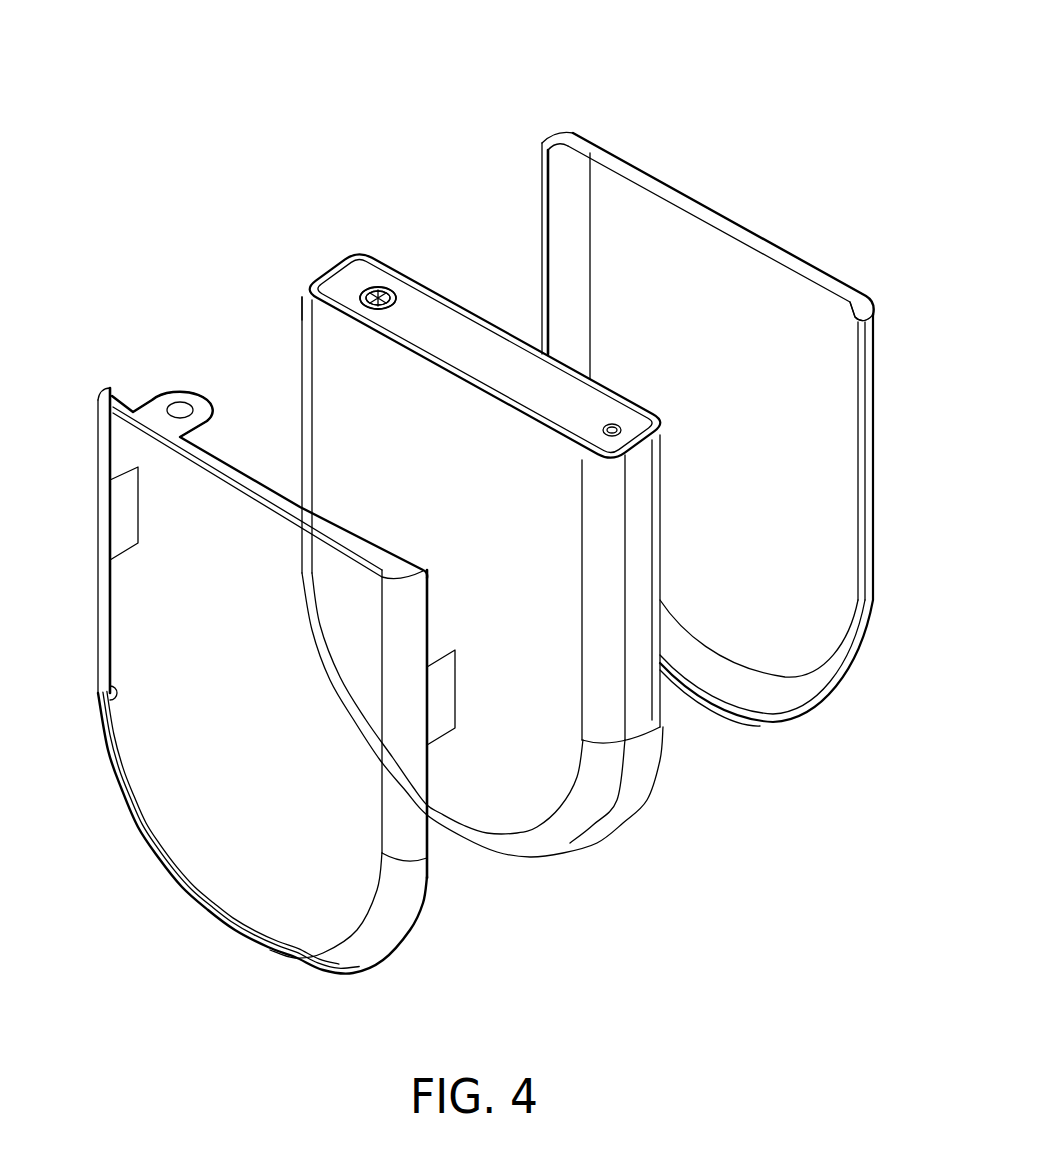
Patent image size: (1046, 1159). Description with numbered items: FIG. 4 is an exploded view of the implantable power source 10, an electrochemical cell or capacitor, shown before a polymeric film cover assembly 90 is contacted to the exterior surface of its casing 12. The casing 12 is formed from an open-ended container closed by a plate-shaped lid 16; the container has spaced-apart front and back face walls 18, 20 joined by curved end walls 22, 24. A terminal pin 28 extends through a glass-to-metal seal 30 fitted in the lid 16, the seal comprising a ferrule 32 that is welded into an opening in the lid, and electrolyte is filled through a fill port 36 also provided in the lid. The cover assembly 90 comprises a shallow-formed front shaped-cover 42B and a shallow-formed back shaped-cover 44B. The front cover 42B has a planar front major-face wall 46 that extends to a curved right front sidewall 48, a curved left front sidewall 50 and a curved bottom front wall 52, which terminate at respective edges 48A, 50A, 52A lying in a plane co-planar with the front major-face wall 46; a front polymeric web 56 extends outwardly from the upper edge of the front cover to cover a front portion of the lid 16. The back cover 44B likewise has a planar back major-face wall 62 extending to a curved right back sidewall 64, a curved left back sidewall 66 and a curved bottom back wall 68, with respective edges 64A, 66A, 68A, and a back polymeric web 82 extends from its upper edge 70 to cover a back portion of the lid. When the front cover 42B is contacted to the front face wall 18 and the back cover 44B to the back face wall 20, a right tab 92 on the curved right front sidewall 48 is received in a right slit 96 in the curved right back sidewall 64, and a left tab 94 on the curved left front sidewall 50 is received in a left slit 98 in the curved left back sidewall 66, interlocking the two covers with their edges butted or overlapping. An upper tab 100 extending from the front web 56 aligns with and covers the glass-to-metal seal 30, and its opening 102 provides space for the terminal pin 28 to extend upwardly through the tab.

The implantable power source 10 is at (373, 226).
The casing 12 is at (478, 571).
The lid 16 is at (537, 400).
The front face wall 18 is at (340, 346).
The back face wall 20 is at (660, 520).
The curved end wall 22 is at (640, 593).
The curved end wall 24 is at (300, 325).
The terminal pin 28 is at (368, 290).
The glass-to-metal seal 30 is at (398, 282).
The ferrule 32 is at (393, 306).
The fill port 36 is at (620, 428).
The front shaped-cover 42B is at (292, 681).
The back shaped-cover 44B is at (703, 453).
The front major-face wall 46 is at (237, 830).
The curved right front sidewall 48 is at (403, 767).
The edge 48A is at (430, 618).
The curved left front sidewall 50 is at (98, 622).
The edge 50A is at (112, 600).
The curved bottom front wall 52 is at (267, 957).
The edge 52A is at (243, 927).
The front polymeric web 56 is at (222, 462).
The back major-face wall 62 is at (823, 573).
The curved right back sidewall 64 is at (860, 520).
The edge 64A is at (872, 350).
The curved left back sidewall 66 is at (567, 253).
The edge 66A is at (542, 178).
The curved bottom back wall 68 is at (788, 710).
The edge 68A is at (699, 706).
The upper edge 70 is at (703, 205).
The back polymeric web 82 is at (828, 282).
The polymeric film cover assembly 90 is at (703, 82).
The right tab 92 is at (443, 690).
The left tab 94 is at (118, 515).
The right slit 96 is at (867, 464).
The left slit 98 is at (548, 288).
The upper tab 100 is at (150, 402).
The opening 102 is at (180, 408).